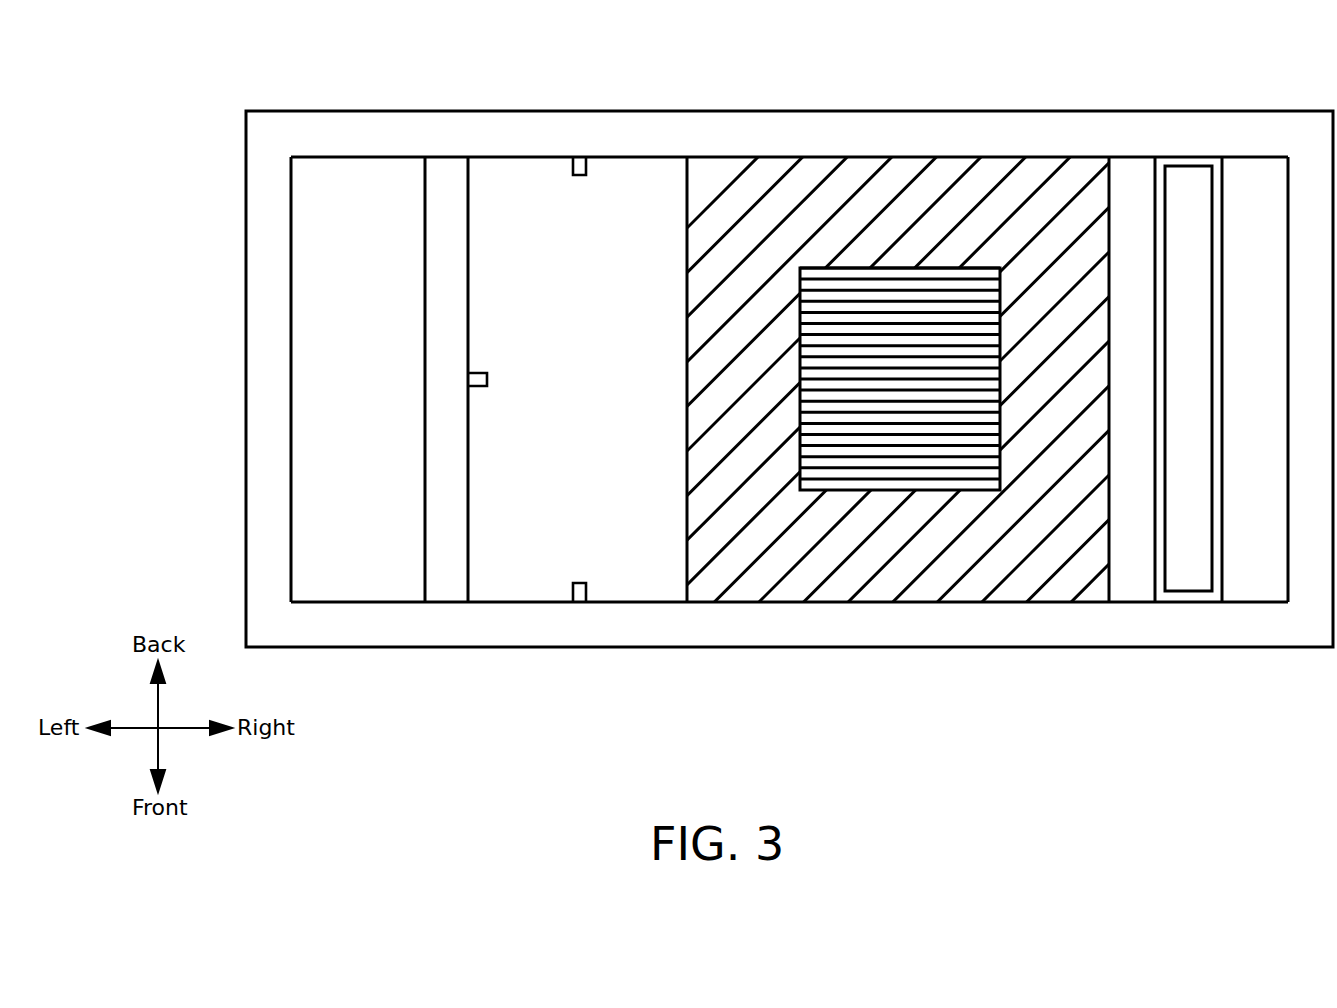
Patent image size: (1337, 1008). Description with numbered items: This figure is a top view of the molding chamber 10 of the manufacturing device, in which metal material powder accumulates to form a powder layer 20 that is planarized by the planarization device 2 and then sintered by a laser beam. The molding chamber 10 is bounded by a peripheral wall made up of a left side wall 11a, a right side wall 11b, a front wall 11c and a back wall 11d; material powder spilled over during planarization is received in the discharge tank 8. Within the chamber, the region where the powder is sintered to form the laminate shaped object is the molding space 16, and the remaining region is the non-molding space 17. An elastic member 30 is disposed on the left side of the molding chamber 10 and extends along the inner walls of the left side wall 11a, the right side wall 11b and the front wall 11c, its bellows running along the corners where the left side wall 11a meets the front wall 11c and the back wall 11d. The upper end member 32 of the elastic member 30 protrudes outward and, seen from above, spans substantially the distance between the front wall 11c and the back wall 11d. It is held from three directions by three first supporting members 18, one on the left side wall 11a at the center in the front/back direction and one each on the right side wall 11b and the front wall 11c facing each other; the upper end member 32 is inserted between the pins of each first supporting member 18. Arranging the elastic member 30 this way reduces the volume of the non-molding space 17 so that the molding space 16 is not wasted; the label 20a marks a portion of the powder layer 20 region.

The planarization device 2 is at (1185, 187).
The discharge tank 8 is at (362, 203).
The molding chamber 10 is at (1026, 574).
The left side wall 11a is at (437, 535).
The right side wall 11b is at (1132, 565).
The front wall 11c is at (908, 625).
The back wall 11d is at (833, 135).
The molding space 16 is at (855, 295).
The non-molding space 17 is at (772, 563).
The first supporting member 18 is at (577, 158).
The powder layer 20 is at (918, 190).
The opening 20a is at (972, 280).
The elastic member 30 is at (628, 178).
The upper end member 32 is at (512, 562).